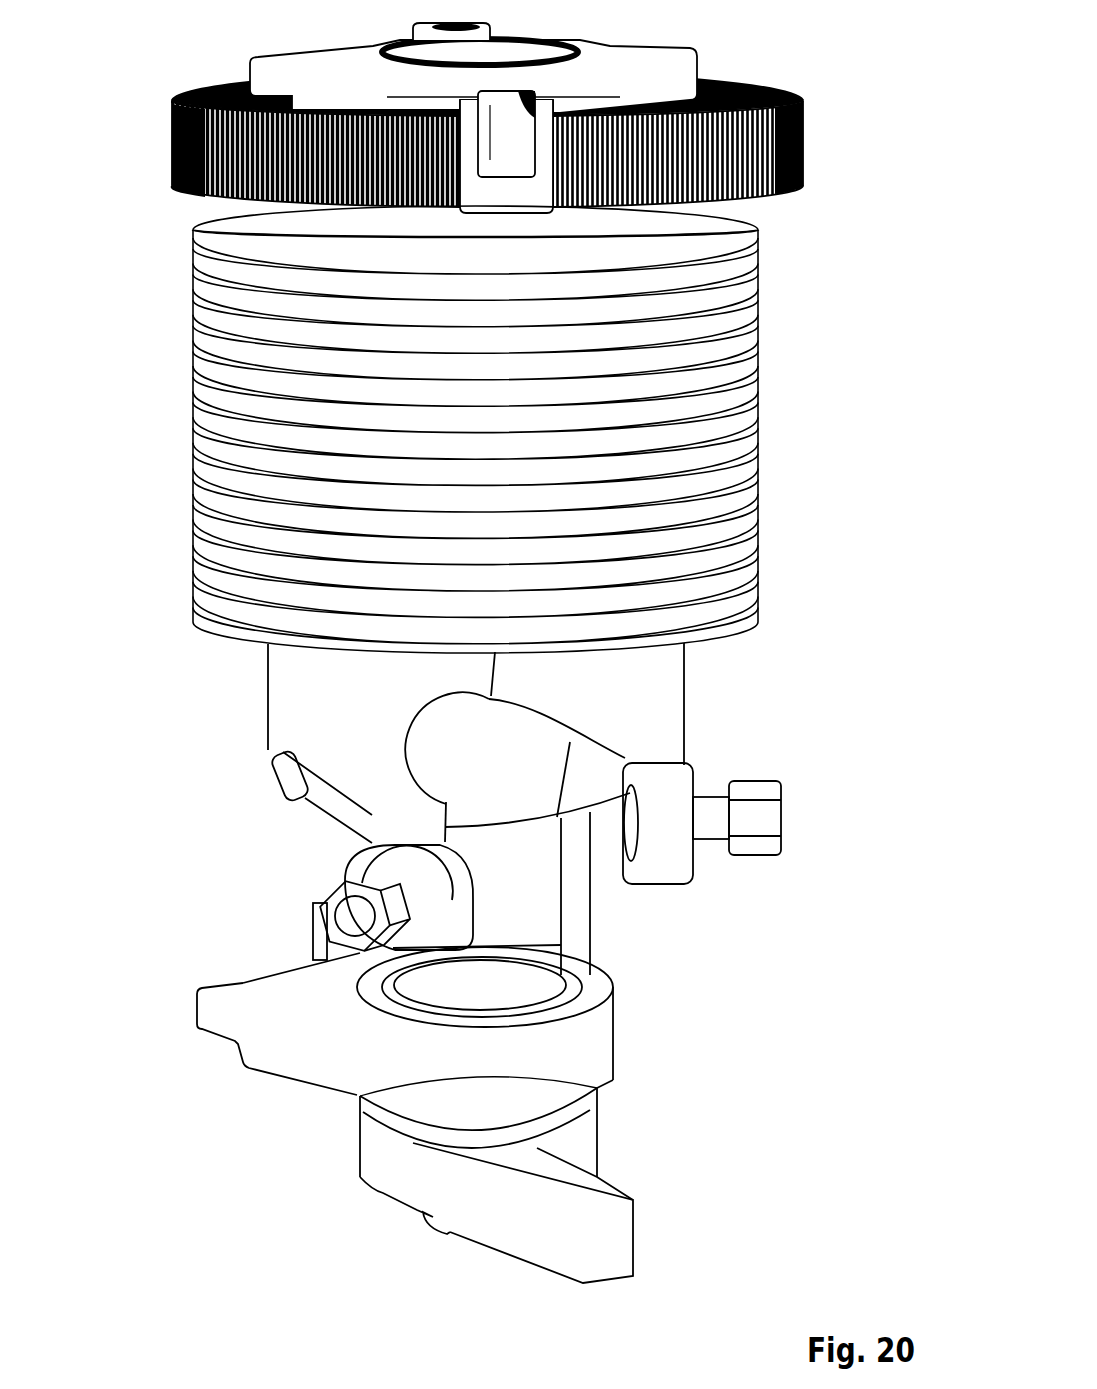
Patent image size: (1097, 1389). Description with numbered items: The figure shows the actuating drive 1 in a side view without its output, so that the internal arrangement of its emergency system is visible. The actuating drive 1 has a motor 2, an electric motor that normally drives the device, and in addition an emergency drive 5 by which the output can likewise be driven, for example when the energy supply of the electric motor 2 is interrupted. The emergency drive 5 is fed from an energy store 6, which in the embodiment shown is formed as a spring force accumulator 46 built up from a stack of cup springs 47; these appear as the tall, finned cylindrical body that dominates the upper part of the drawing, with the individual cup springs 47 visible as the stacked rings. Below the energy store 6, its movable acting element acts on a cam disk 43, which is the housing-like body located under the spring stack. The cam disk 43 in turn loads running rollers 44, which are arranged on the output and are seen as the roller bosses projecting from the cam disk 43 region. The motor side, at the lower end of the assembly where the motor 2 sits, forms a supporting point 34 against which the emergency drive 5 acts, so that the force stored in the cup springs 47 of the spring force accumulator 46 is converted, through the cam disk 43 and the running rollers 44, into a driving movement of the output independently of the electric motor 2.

The actuating drive 1 is at (874, 78).
The motor 2 is at (443, 977).
The emergency drive 5 is at (812, 227).
The energy store 6 is at (402, 429).
The spring force accumulator 46 is at (165, 458).
The cup springs 47 is at (362, 580).
The cam disk 43 is at (352, 733).
The running rollers 44 is at (325, 809).
The supporting point 34 is at (582, 858).